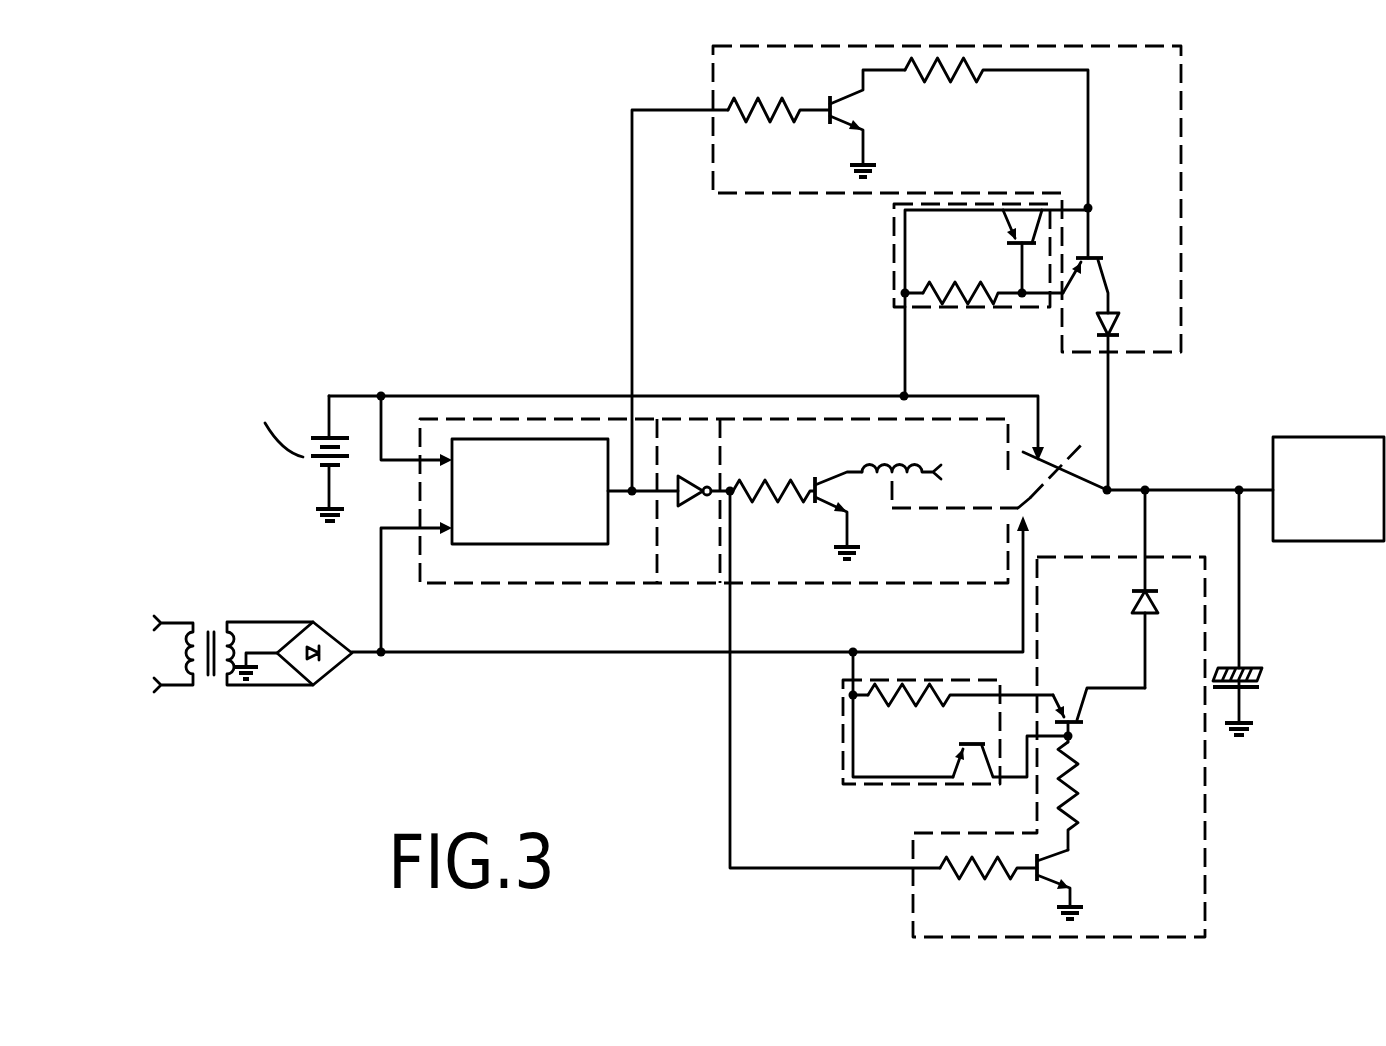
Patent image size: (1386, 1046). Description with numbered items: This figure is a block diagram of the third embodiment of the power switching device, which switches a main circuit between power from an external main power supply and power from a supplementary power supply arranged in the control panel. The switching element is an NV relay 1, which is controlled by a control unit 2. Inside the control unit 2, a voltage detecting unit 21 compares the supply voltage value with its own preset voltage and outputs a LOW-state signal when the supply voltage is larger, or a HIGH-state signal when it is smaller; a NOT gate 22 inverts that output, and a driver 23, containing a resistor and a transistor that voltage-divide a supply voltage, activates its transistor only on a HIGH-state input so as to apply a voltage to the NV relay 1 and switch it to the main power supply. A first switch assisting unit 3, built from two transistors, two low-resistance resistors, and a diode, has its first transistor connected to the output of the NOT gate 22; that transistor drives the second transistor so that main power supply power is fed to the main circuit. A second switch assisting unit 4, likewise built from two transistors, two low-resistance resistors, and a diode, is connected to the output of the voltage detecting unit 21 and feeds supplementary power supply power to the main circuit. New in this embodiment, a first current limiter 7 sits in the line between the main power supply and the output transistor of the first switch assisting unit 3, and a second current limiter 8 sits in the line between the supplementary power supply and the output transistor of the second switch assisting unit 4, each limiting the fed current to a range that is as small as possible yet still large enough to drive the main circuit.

The NV relay 1 is at (1060, 442).
The control unit 2 is at (719, 490).
The first switch assisting unit 3 is at (1203, 853).
The second switch assisting unit 4 is at (1182, 153).
The first current limiter 7 is at (845, 722).
The second current limiter 8 is at (894, 270).
The voltage detecting unit 21 is at (500, 440).
The NOT gate 22 is at (685, 477).
The driver 23 is at (786, 452).